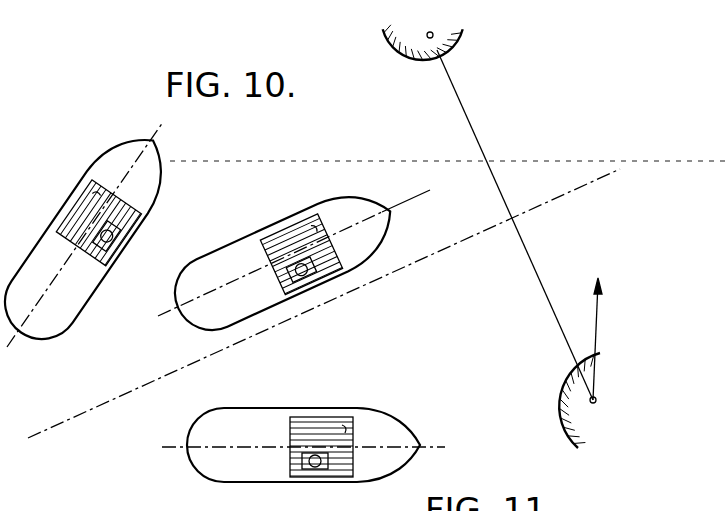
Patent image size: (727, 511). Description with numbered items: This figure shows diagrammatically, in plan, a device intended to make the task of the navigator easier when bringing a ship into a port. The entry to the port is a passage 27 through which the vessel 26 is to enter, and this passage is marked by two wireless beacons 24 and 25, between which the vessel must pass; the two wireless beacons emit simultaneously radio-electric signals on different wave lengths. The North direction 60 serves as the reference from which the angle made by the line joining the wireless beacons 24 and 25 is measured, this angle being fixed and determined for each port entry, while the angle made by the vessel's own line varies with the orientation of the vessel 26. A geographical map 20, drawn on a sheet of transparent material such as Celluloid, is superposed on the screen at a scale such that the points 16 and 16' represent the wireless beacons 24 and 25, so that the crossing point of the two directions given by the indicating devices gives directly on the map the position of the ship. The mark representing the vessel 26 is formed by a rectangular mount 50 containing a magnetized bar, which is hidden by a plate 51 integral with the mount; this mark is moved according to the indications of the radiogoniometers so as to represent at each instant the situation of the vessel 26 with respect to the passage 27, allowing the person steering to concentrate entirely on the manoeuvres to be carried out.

The point 16 is at (211, 311).
The point 16' is at (239, 348).
The geographical map 20 is at (61, 504).
The wireless beacon 24 is at (427, 36).
The wireless beacon 25 is at (592, 404).
The vessel 26 is at (72, 325).
The passage 27 is at (515, 225).
The rectangular mount 50 is at (80, 213).
The plate 51 is at (83, 200).
The North direction 60 is at (597, 318).